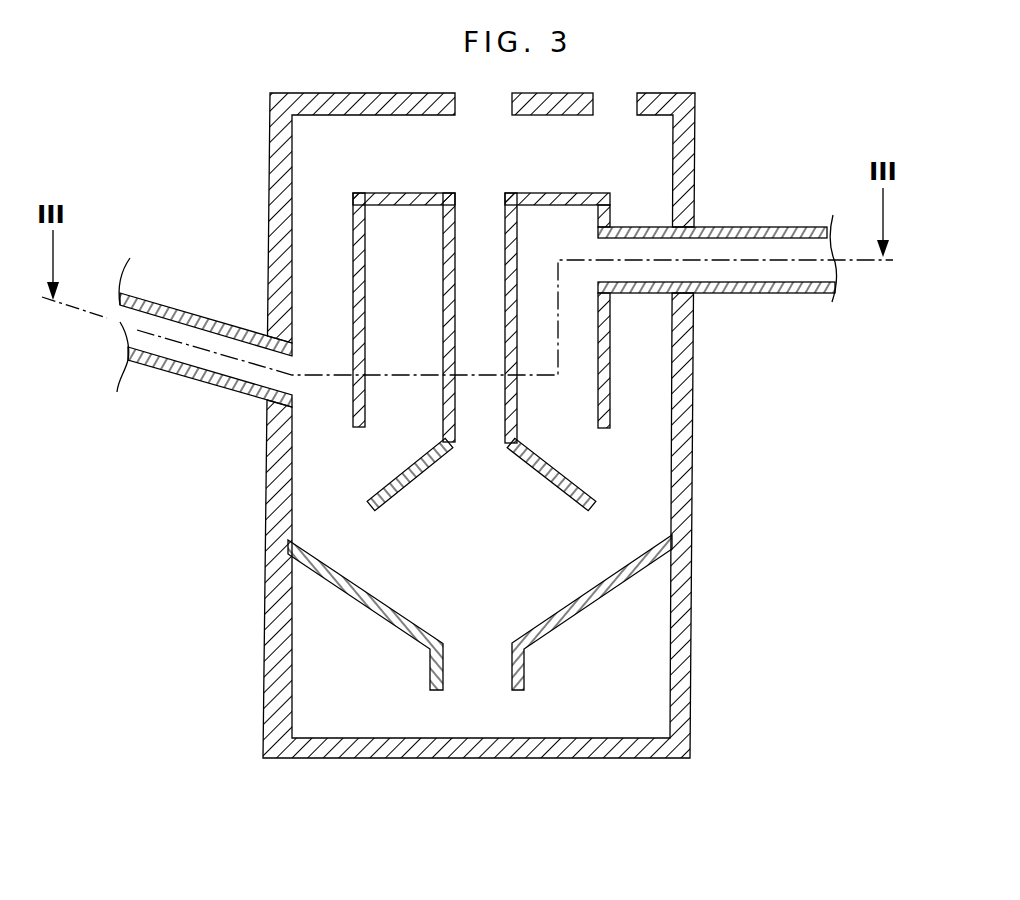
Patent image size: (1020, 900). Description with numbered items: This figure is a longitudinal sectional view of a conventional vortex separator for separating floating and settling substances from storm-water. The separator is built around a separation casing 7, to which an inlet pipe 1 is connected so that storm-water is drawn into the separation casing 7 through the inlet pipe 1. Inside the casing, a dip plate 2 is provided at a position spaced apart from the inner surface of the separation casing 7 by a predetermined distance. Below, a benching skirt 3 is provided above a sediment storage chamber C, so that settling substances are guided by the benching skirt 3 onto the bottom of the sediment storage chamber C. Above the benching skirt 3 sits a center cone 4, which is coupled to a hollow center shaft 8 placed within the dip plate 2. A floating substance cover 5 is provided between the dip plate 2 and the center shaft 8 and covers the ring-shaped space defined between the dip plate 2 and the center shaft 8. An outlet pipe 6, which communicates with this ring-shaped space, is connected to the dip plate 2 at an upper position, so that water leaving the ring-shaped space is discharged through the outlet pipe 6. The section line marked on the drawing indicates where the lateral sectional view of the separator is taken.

The inlet pipe 1 is at (190, 378).
The dip plate 2 is at (353, 275).
The benching skirt 3 is at (352, 598).
The center cone 4 is at (593, 493).
The floating substance cover 5 is at (590, 193).
The outlet pipe 6 is at (732, 294).
The separation casing 7 is at (693, 638).
The center shaft 8 is at (518, 410).
The sediment storage chamber C is at (475, 708).